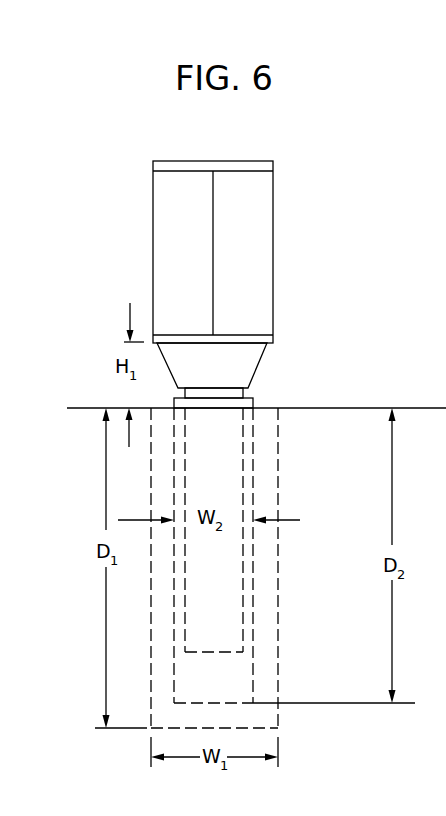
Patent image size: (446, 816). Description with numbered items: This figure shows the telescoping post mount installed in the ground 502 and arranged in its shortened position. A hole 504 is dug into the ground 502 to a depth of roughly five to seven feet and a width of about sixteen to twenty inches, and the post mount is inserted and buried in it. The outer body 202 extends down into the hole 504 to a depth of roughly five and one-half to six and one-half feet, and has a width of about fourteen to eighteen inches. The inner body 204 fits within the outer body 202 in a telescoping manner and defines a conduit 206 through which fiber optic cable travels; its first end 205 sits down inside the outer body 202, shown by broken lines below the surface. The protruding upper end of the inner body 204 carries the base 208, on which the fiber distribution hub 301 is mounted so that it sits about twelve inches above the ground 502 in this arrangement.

The sensor/transmitter housing 301 is at (255, 202).
The base 208 is at (224, 363).
The inner body 204 is at (232, 394).
The outer body 202 is at (253, 492).
The conduit 206 is at (213, 465).
The first end of the inner body 205 is at (213, 652).
The ground 502 is at (362, 408).
The hole 504 is at (278, 615).